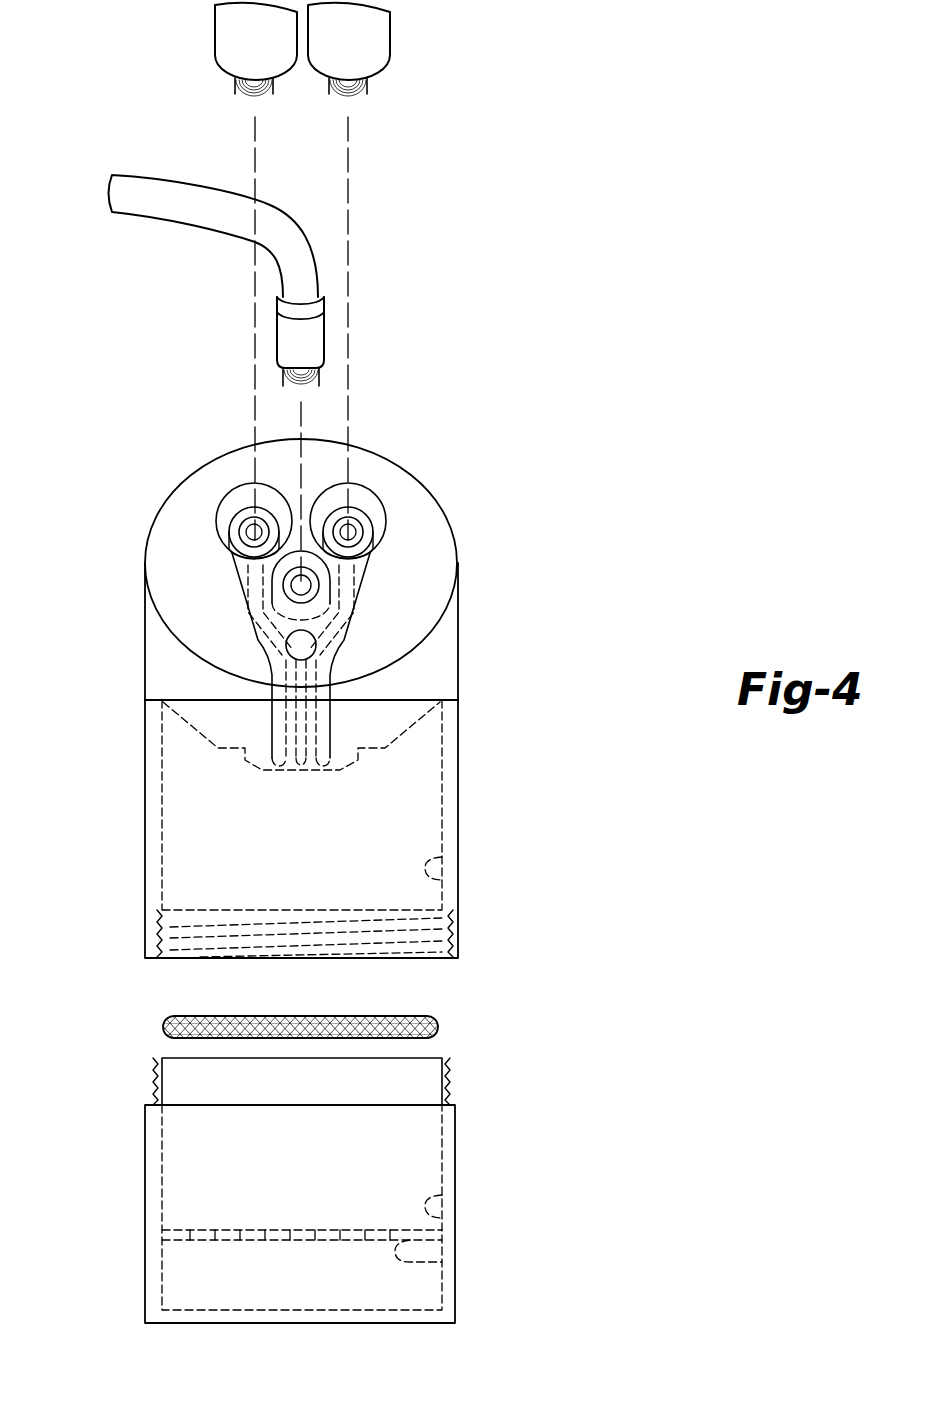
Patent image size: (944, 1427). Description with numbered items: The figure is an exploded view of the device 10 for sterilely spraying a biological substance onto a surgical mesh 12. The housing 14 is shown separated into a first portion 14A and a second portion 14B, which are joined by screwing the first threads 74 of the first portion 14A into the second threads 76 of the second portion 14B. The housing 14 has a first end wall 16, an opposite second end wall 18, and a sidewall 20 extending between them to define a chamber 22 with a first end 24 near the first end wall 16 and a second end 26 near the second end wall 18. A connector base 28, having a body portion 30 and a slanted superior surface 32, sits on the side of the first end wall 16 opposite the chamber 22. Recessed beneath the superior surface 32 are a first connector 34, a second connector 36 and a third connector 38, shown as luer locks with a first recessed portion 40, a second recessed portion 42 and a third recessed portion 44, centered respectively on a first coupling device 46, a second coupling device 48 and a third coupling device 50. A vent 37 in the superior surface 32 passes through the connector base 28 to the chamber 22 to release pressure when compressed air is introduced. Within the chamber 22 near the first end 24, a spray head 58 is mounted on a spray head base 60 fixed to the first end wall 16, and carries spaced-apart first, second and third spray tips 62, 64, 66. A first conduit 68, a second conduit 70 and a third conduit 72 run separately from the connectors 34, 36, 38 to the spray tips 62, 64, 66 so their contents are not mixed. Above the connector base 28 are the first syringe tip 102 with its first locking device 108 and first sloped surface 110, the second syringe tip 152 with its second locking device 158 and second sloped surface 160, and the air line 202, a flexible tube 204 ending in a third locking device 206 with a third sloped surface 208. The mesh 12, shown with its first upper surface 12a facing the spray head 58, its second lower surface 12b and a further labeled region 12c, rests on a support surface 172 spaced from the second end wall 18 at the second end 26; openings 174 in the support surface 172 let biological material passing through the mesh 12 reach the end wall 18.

The device 10 is at (559, 19).
The surgical mesh 12 is at (435, 1020).
The first upper surface 12a is at (392, 1018).
The second lower surface 12b is at (420, 1040).
The gasket outer edge 12c is at (440, 1030).
The housing 14 is at (145, 828).
The first portion 14A is at (145, 782).
The second portion 14B is at (145, 1162).
The first end wall 16 is at (405, 722).
The second end wall 18 is at (175, 1310).
The sidewall 20 is at (442, 884).
The chamber 22 is at (415, 834).
The first end 24 is at (168, 871).
The second end 26 is at (178, 1262).
The connector base 28 is at (448, 632).
The body portion 30 is at (447, 670).
The superior surface 32 is at (437, 522).
The first connector 34 is at (372, 508).
The second connector 36 is at (228, 512).
The vent 37 is at (290, 660).
The third connector 38 is at (313, 565).
The first recessed portion 40 is at (375, 540).
The second recessed portion 42 is at (232, 538).
The third recessed portion 44 is at (282, 583).
The first coupling device 46 is at (348, 520).
The second coupling device 48 is at (254, 520).
The third coupling device 50 is at (306, 588).
The spray head 58 is at (247, 766).
The spray head base 60 is at (172, 712).
The first spray tip 62 is at (330, 772).
The second spray tip 64 is at (277, 772).
The third spray tip 66 is at (300, 772).
The first conduit 68 is at (343, 652).
The second conduit 70 is at (247, 605).
The third conduit 72 is at (287, 647).
The first threads 74 is at (220, 938).
The second threads 76 is at (152, 1082).
The first syringe tip 102 is at (372, 43).
The first locking device 108 is at (367, 80).
The first sloped surface 110 is at (352, 95).
The second syringe tip 152 is at (226, 36).
The second locking device 158 is at (233, 80).
The second sloped surface 160 is at (257, 95).
The support surface 172 is at (280, 1230).
The openings 174 is at (440, 1262).
The air line 202 is at (175, 225).
The flexible tube 204 is at (133, 210).
The third locking device 206 is at (310, 333).
The third sloped surface 208 is at (325, 377).